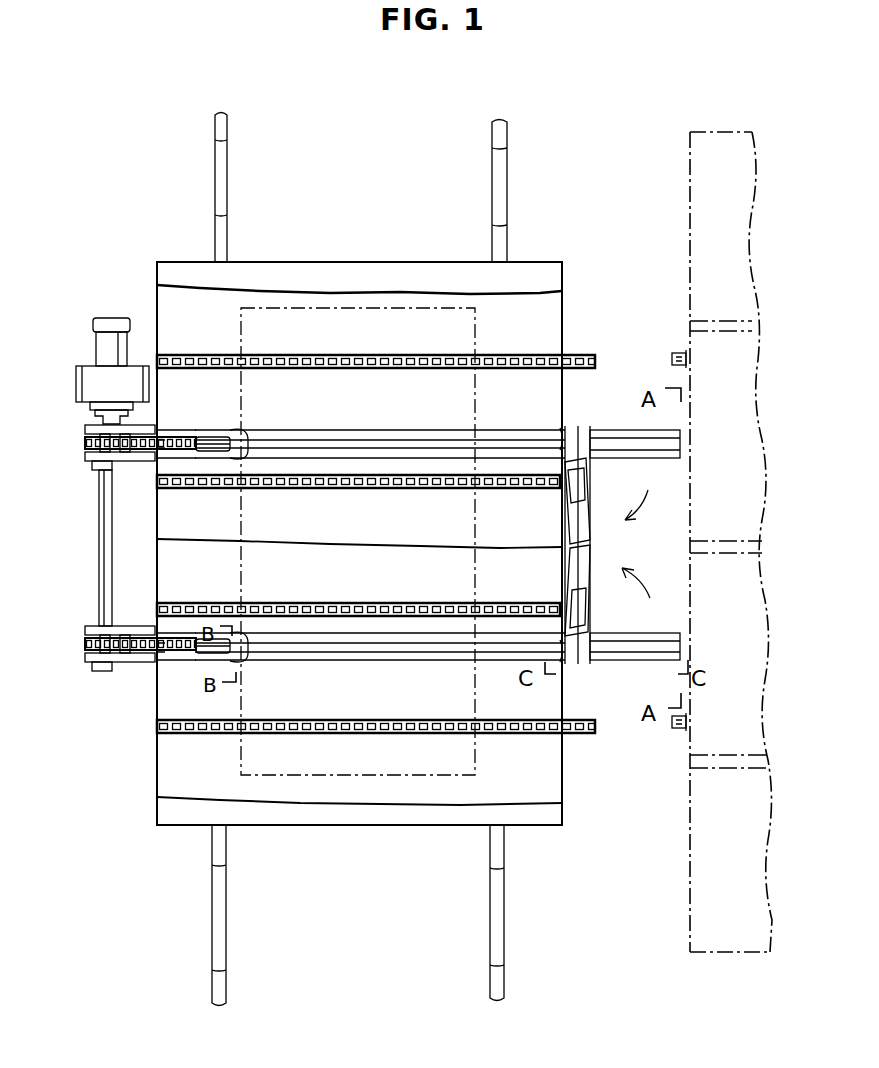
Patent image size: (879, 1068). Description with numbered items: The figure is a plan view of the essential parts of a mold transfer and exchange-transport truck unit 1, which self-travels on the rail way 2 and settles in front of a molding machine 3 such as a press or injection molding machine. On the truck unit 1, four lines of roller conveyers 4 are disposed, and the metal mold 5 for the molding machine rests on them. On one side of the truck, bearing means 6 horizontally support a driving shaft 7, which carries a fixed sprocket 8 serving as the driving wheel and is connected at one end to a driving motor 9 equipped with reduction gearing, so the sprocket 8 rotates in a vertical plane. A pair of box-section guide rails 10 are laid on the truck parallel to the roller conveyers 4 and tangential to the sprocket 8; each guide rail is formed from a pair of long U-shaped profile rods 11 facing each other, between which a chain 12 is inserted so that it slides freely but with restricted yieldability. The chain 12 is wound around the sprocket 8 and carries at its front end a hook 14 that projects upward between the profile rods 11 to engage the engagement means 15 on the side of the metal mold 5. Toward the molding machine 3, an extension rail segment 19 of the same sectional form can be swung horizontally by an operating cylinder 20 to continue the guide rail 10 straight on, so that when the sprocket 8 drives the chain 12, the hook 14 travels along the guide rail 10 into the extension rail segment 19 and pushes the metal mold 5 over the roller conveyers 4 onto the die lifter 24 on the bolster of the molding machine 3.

The mold transfer and exchange-transport truck unit 1 is at (328, 828).
The rail way 2 is at (222, 909).
The molding machine 3 is at (690, 205).
The roller conveyers 4 is at (512, 355).
The metal mold 5 is at (468, 778).
The bearing means 6 is at (92, 426).
The driving shaft 7 is at (99, 538).
The sprocket 8 is at (85, 443).
The driving motor 9 is at (100, 345).
The guide rails 10 is at (174, 428).
The profile rods 11 is at (310, 432).
The chain 12 is at (131, 463).
The hook 14 is at (216, 437).
The engagement means 15 is at (240, 431).
The extension rail segment 19 is at (624, 430).
The operating cylinder 20 is at (588, 494).
The die lifter 24 is at (716, 540).